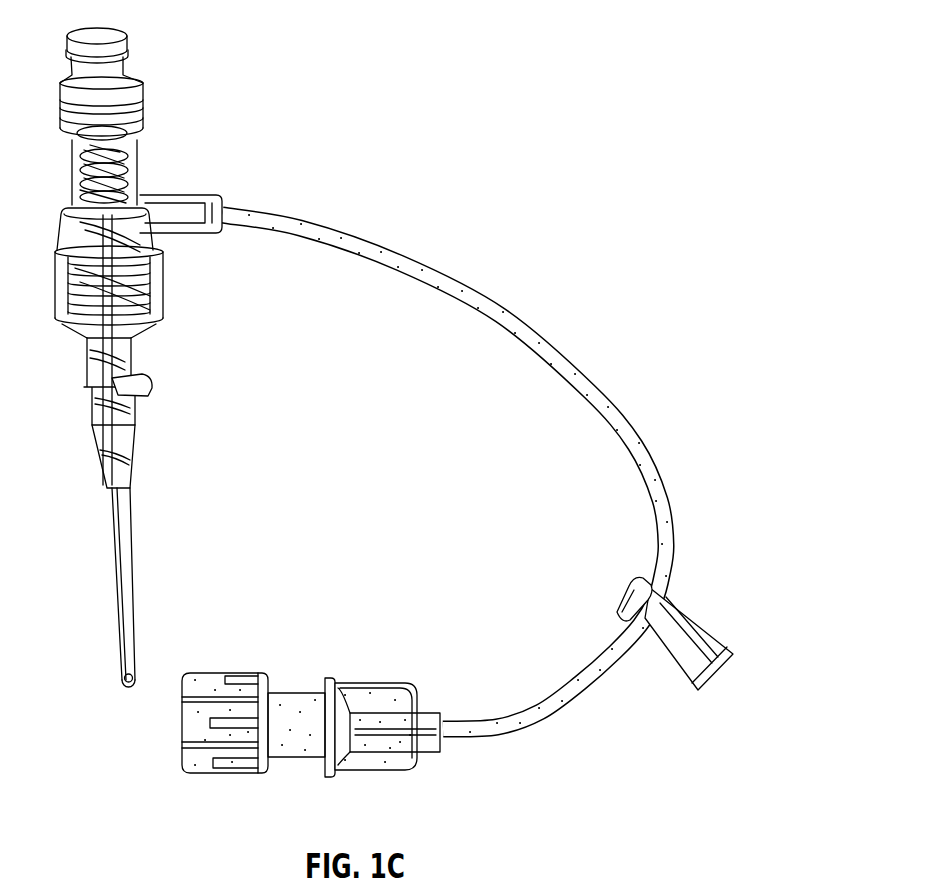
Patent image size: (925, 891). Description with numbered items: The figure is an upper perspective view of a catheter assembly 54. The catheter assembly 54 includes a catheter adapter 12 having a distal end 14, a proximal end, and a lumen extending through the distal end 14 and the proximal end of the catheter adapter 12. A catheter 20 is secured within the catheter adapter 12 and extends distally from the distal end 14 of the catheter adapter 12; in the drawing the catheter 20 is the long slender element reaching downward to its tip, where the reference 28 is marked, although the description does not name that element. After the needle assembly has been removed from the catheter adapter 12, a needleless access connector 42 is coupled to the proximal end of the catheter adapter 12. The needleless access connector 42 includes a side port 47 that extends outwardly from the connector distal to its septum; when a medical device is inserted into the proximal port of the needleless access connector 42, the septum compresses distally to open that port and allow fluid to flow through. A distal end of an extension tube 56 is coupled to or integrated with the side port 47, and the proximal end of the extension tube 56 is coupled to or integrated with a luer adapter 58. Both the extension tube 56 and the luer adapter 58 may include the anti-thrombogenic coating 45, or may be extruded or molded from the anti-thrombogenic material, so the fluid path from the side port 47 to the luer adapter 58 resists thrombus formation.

The catheter adapter 12 is at (92, 408).
The distal end 14 is at (128, 488).
The catheter 20 is at (118, 600).
The needle tip 28 is at (128, 692).
The needleless access connector 42 is at (140, 163).
The anti-thrombogenic coating 45 is at (390, 762).
The side port 47 is at (200, 193).
The catheter assembly 54 is at (550, 195).
The extension tube 56 is at (524, 328).
The luer adapter 58 is at (298, 748).